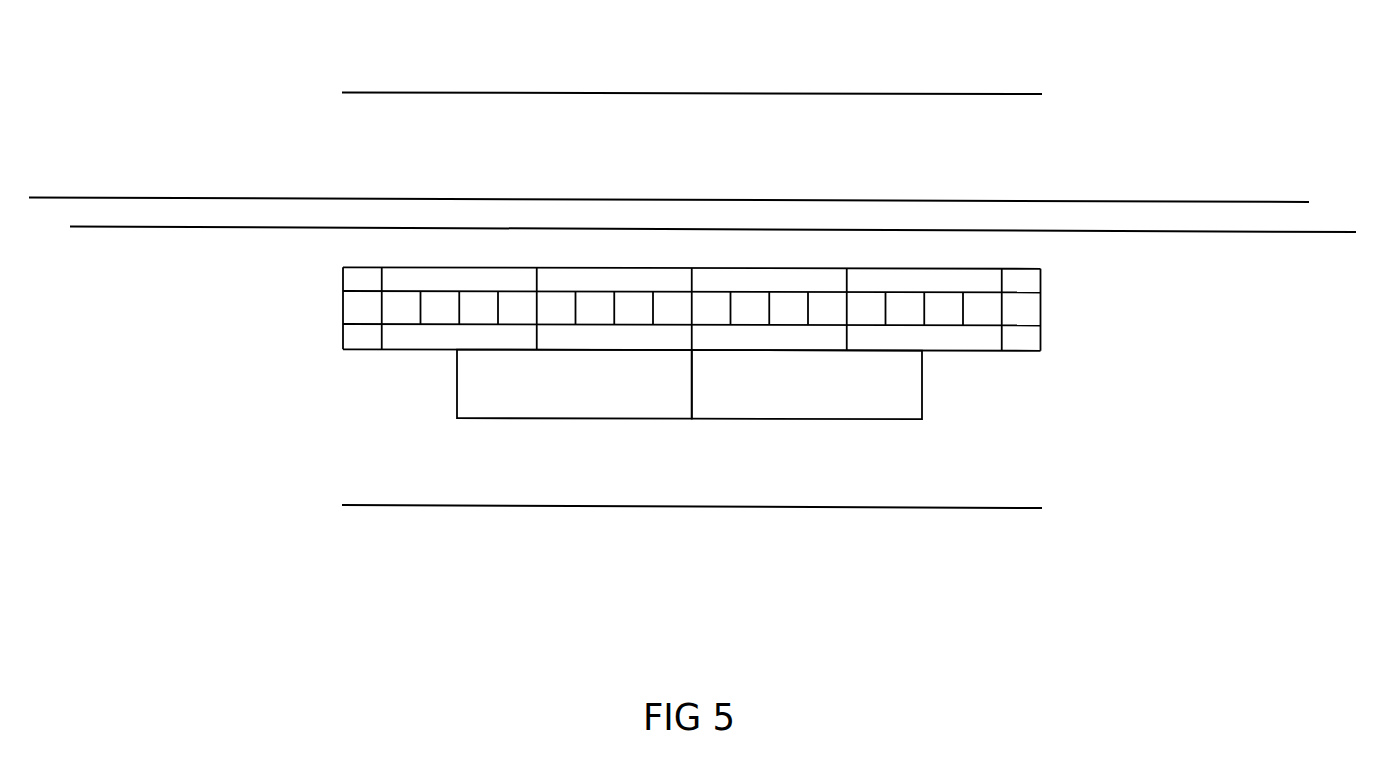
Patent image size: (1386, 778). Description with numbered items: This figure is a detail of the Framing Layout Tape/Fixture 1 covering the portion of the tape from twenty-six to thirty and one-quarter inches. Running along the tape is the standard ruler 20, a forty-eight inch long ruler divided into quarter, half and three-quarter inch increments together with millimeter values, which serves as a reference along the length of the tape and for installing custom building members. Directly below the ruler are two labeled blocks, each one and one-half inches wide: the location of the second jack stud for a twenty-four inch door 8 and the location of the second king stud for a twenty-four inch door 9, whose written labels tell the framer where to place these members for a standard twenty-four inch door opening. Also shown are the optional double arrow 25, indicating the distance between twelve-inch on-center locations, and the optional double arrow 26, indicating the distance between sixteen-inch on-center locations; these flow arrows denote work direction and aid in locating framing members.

The Framing Layout Tape/Fixture 1 is at (478, 95).
The double arrow indicating the distance between the 12 inch On Center Location 25 is at (549, 229).
The double arrow indicating the distance between the 16 inch On Center Location 26 is at (766, 205).
The standard ruler 20 is at (438, 321).
The location of the 2nd Jack Stud for 24 inch Door 8 is at (562, 418).
The location of the 2nd King Stud for 24 inch Door 9 is at (770, 419).